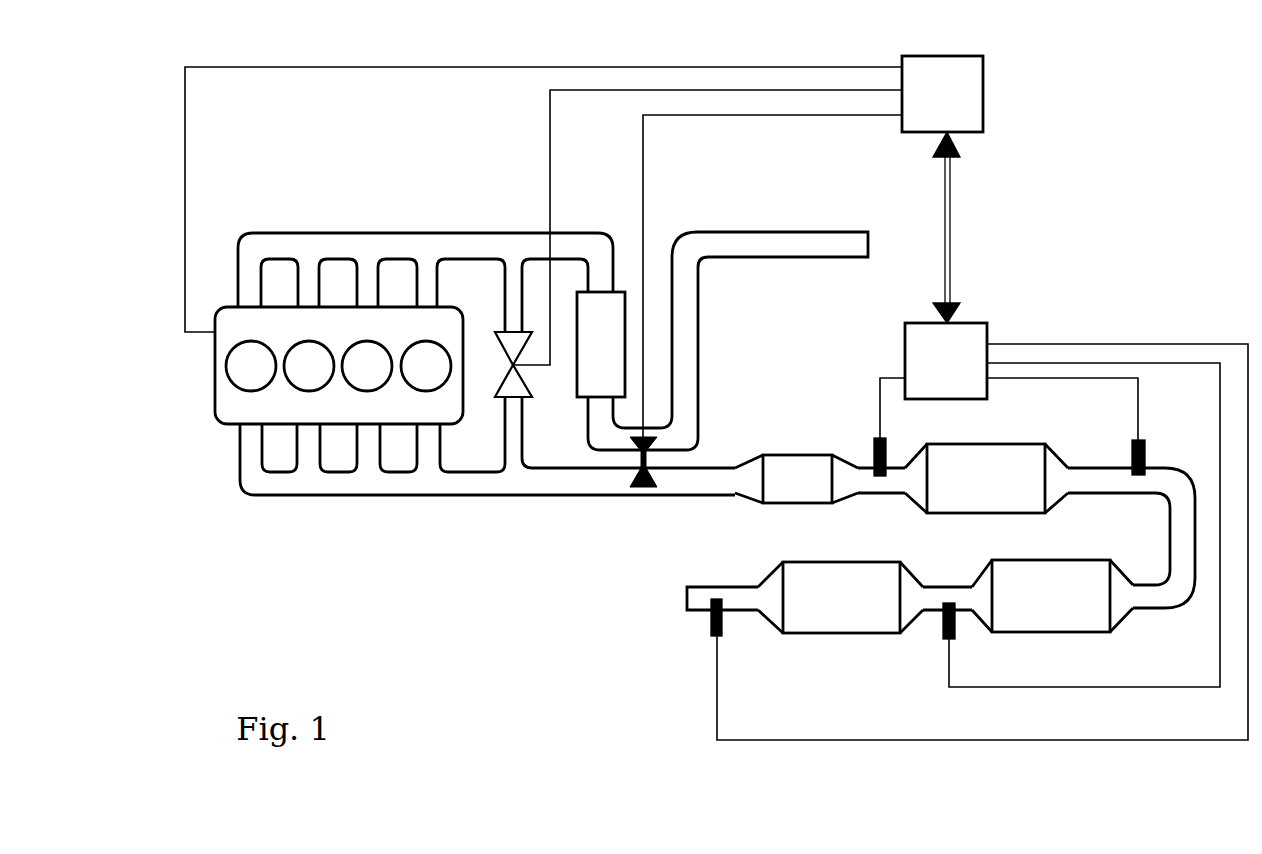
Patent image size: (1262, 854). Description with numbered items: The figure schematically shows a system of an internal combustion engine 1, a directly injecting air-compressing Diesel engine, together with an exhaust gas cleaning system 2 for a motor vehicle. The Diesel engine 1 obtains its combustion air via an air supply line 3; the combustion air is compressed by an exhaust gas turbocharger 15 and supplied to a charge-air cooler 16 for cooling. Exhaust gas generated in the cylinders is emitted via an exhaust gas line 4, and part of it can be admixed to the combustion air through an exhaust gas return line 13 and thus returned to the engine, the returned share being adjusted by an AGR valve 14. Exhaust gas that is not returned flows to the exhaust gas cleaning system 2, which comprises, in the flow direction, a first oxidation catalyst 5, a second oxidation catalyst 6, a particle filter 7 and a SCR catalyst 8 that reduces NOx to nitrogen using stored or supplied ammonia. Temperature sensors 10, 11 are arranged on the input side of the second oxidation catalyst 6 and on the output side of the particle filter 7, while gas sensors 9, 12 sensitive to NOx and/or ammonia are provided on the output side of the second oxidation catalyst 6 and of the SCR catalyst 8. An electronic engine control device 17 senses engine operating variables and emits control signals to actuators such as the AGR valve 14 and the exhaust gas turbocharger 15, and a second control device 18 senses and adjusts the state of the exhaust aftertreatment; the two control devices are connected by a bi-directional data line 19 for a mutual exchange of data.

The internal combustion engine 1 is at (222, 366).
The exhaust gas cleaning system 2 is at (625, 640).
The air supply line 3 is at (688, 283).
The exhaust gas line 4 is at (570, 483).
The first oxidation catalyst 5 is at (783, 492).
The second oxidation catalyst 6 is at (979, 494).
The particle filter 7 is at (1048, 612).
The SCR catalyst 8 is at (835, 610).
The gas sensor 9 is at (1135, 440).
The temperature sensor 10 is at (872, 447).
The temperature sensor 11 is at (945, 620).
The gas sensor 12 is at (712, 617).
The exhaust gas return line 13 is at (512, 422).
The AGR valve 14 is at (503, 383).
The exhaust gas turbocharger 15 is at (647, 493).
The charge-air cooler 16 is at (586, 355).
The engine control device 17 is at (932, 105).
The second control device 18 is at (935, 374).
The bi-directional data line 19 is at (950, 195).